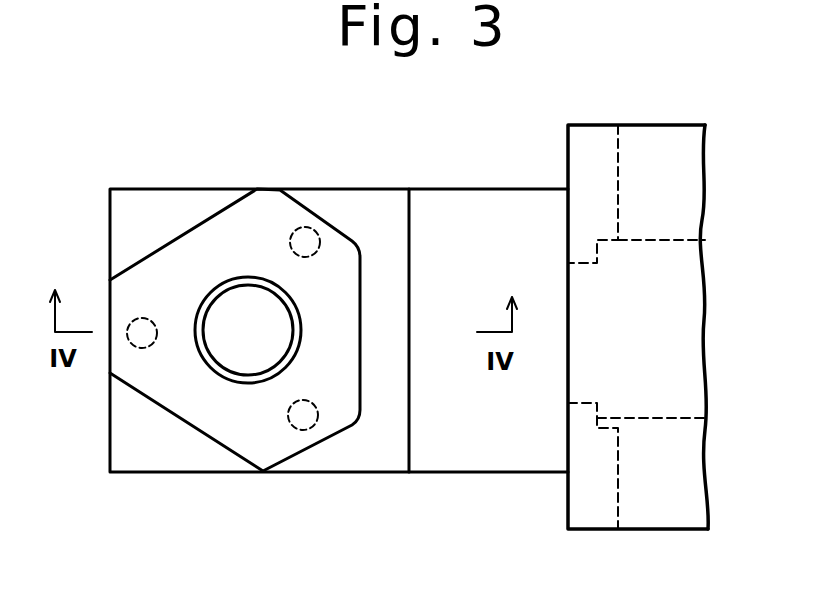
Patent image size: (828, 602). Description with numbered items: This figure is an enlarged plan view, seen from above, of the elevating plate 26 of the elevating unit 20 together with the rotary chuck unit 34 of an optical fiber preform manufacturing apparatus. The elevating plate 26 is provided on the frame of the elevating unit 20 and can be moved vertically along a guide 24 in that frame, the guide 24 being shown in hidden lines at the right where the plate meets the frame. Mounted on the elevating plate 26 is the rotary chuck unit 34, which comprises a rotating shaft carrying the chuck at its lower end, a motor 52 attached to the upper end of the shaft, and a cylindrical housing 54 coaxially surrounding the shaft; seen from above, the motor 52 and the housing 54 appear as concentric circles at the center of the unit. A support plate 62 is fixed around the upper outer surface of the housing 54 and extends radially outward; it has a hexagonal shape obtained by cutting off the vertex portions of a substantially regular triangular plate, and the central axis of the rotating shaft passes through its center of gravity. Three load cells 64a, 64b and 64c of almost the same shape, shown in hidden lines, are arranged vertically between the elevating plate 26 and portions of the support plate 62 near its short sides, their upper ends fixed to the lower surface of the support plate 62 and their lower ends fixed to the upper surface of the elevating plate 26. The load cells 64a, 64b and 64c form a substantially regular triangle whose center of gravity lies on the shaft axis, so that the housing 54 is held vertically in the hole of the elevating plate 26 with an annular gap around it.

The elevating unit 20 is at (648, 122).
The guide 24 is at (598, 178).
The elevating plate 26 is at (467, 448).
The rotary chuck unit 34 is at (243, 253).
The motor 52 is at (240, 352).
The cylindrical housing 54 is at (263, 383).
The support plate 62 is at (190, 408).
The load cell 64a is at (131, 345).
The load cell 64b is at (312, 430).
The load cell 64c is at (308, 224).